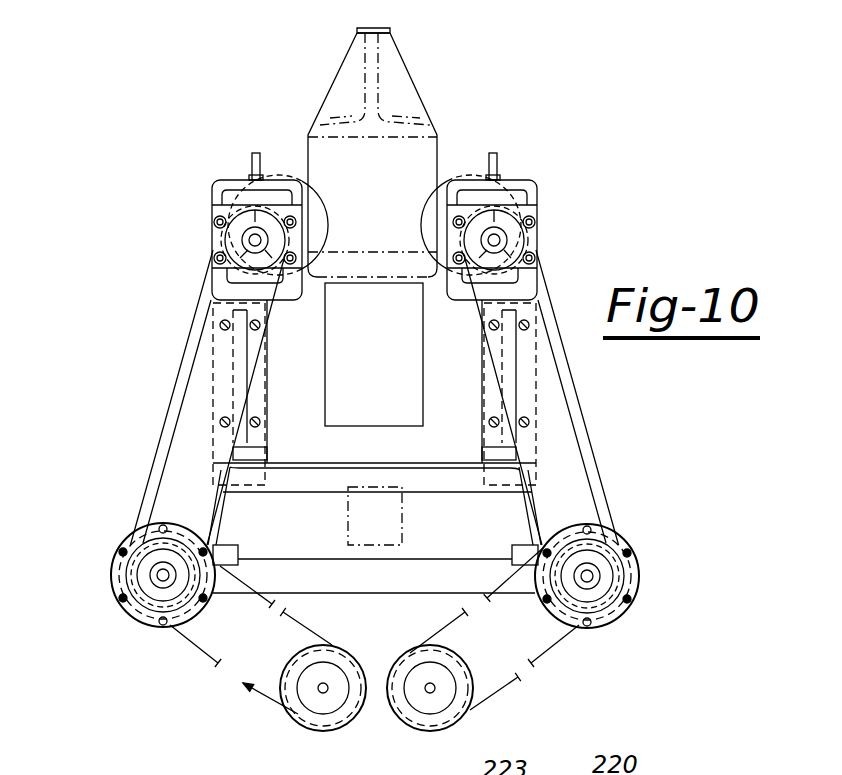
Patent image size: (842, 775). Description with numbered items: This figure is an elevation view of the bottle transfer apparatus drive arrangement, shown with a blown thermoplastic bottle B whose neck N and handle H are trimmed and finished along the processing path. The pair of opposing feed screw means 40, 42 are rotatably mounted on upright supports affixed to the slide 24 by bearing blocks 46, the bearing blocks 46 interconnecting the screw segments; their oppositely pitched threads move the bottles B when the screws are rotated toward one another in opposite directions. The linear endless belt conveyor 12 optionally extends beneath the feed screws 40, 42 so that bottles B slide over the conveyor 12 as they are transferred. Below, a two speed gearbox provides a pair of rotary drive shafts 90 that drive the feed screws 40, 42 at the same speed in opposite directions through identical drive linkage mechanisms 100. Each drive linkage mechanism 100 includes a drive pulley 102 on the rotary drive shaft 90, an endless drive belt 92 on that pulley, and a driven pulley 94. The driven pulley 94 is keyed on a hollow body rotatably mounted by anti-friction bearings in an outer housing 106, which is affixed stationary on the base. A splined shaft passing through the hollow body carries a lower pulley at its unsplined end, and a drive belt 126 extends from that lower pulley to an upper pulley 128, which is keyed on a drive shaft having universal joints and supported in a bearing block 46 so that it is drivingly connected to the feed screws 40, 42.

The bottle B is at (317, 97).
The neck N is at (380, 25).
The handle H is at (377, 70).
The linear endless belt conveyor 12 is at (350, 310).
The slide 24 is at (300, 483).
The feed screw means 40 is at (463, 188).
The feed screw means 42 is at (285, 172).
The bearing block 46 is at (222, 200).
The rotary drive shaft 90 is at (323, 696).
The endless drive belt 92 is at (198, 656).
The driven pulley 94 is at (132, 577).
The drive linkage mechanism 100 is at (140, 413).
The drive pulley 102 is at (288, 708).
The outer housing 106 is at (125, 548).
The drive belt 126 is at (193, 355).
The upper pulley 128 is at (210, 242).